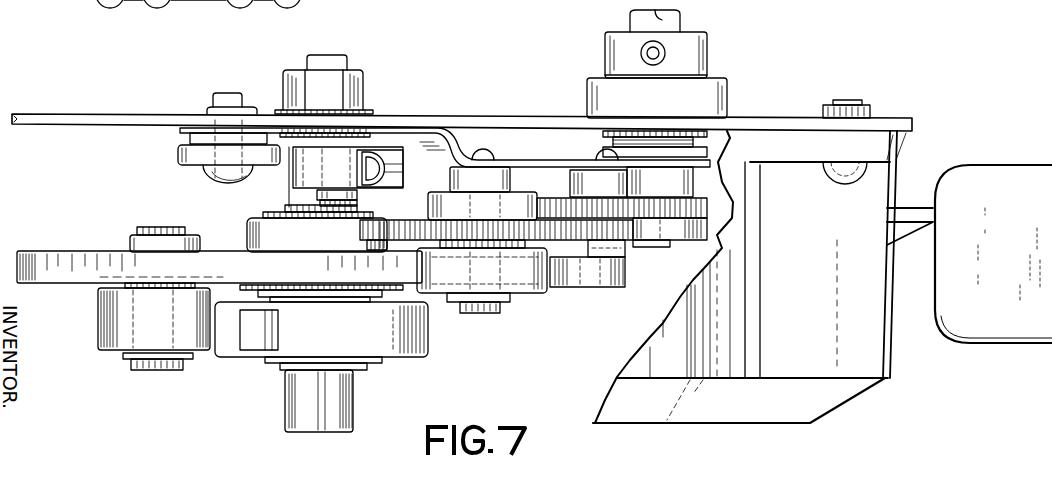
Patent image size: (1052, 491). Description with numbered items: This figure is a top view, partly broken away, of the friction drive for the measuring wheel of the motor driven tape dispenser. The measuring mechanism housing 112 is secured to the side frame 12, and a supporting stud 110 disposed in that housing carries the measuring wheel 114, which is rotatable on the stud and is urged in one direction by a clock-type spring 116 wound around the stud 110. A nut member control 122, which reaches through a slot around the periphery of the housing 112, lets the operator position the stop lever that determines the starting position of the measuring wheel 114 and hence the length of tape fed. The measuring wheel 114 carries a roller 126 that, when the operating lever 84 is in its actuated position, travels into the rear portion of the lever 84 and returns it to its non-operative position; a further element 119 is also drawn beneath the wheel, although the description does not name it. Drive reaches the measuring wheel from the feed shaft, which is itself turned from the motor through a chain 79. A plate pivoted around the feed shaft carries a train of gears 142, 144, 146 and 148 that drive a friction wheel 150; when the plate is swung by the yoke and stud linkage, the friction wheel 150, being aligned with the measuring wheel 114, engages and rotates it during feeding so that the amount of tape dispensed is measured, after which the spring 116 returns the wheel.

The side frame 12 is at (788, 117).
The chain 79 is at (681, 26).
The operating lever 84 is at (1037, 148).
The supporting stud 110 is at (297, 412).
The measuring mechanism housing 112 is at (880, 362).
The measuring wheel 114 is at (90, 281).
The clock-type spring 116 is at (252, 344).
The roller 119 is at (107, 334).
The nut member control 122 is at (97, 2).
The roller 126 is at (131, 242).
The gear 142 is at (665, 240).
The gear 144 is at (557, 199).
The gear 146 is at (627, 251).
The gear 148 is at (417, 221).
The friction wheel 150 is at (537, 298).